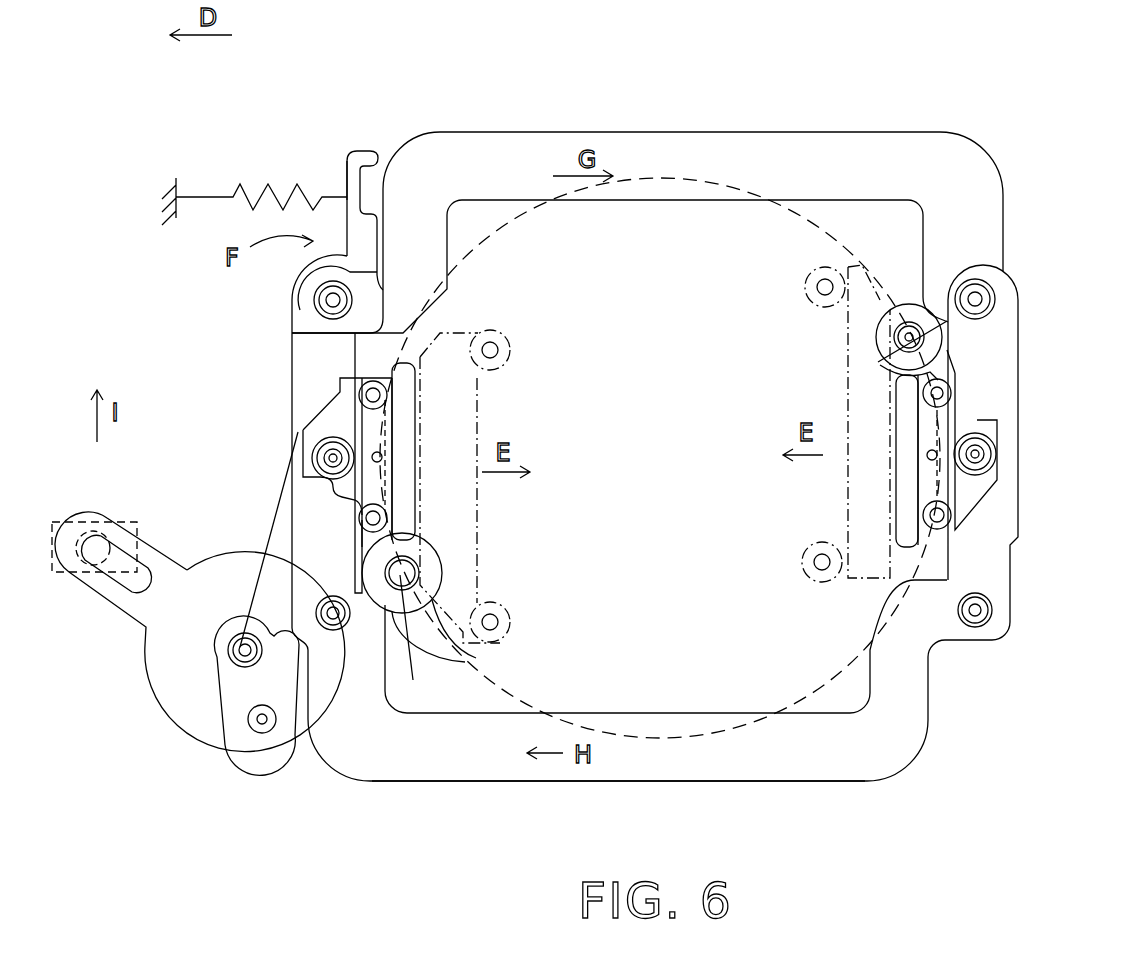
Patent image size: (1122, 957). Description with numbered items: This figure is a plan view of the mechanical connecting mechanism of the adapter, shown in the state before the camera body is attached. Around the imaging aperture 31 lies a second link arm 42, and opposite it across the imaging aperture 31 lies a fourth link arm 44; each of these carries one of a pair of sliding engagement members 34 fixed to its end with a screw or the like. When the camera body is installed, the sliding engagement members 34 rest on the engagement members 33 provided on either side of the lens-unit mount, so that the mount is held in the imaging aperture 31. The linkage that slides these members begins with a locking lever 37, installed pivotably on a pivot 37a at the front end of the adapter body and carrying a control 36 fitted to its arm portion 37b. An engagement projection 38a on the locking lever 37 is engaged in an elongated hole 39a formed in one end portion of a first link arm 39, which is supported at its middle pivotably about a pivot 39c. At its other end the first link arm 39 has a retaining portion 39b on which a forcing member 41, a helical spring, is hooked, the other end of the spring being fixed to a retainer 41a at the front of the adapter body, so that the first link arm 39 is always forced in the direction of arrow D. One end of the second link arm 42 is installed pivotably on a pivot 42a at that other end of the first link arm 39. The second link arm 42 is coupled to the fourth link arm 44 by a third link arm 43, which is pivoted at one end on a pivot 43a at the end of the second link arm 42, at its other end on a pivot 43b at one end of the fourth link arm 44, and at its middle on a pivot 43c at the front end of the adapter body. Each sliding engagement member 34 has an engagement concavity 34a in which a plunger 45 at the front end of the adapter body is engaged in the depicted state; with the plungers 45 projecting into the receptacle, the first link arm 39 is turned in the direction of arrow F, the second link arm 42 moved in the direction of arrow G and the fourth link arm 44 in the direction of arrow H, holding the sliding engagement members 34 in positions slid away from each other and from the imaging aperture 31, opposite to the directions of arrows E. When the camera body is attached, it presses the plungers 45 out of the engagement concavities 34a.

The imaging aperture 31 is at (677, 186).
The engagement members 33 is at (490, 600).
The sliding engagement members 34 is at (405, 357).
The engagement concavity 34a is at (912, 347).
The control 36 is at (125, 522).
The locking lever 37 is at (167, 697).
The pivot 37a is at (240, 640).
The arm portion 37b is at (132, 617).
The engagement projection 38a is at (275, 733).
The first link arm 39 is at (293, 400).
The elongated hole 39a is at (225, 745).
The retaining portion 39b is at (366, 153).
The pivot 39c is at (333, 458).
The forcing member 41 is at (240, 185).
The retainer 41a is at (162, 180).
The second link arm 42 is at (843, 137).
The pivot 42a is at (322, 306).
The third link arm 43 is at (1000, 310).
The pivot 43a is at (988, 297).
The pivot 43b is at (997, 610).
The pivot 43c is at (997, 455).
The fourth link arm 44 is at (677, 770).
The plunger 45 is at (477, 660).